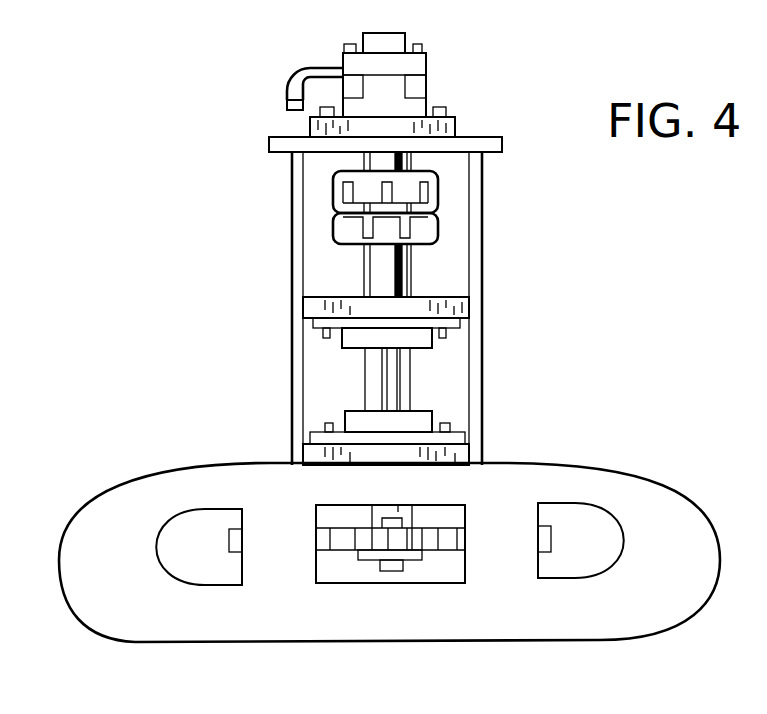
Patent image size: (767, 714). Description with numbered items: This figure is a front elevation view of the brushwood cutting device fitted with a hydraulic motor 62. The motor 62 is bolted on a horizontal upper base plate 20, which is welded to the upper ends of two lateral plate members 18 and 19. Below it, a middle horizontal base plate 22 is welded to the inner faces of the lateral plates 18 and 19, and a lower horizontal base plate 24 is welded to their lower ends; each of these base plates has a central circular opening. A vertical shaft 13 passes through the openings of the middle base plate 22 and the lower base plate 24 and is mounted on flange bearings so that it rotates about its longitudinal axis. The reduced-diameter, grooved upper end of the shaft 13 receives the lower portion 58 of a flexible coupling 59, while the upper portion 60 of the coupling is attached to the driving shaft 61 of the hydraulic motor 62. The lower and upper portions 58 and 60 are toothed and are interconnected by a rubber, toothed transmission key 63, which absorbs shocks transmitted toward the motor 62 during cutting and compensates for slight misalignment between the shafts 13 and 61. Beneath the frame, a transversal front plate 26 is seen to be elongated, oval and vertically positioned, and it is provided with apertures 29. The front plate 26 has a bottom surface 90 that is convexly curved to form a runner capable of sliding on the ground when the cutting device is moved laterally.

The vertical shaft 13 is at (390, 387).
The right rectangular plate member 18 is at (297, 364).
The vertical rectangular plate member 19 is at (475, 281).
The upper base plate 20 is at (268, 137).
The middle base plate 22 is at (462, 308).
The lower base plate 24 is at (317, 454).
The front plate 26 is at (170, 623).
The apertures 29 is at (232, 576).
The lower portion of flexible coupling 58 is at (343, 235).
The flexible coupling 59 is at (443, 214).
The upper portion of flexible coupling 60 is at (340, 185).
The driving shaft 61 is at (407, 158).
The hydraulic motor 62 is at (417, 87).
The rubber toothed transmission key 63 is at (337, 212).
The bottom surface 90 is at (576, 644).